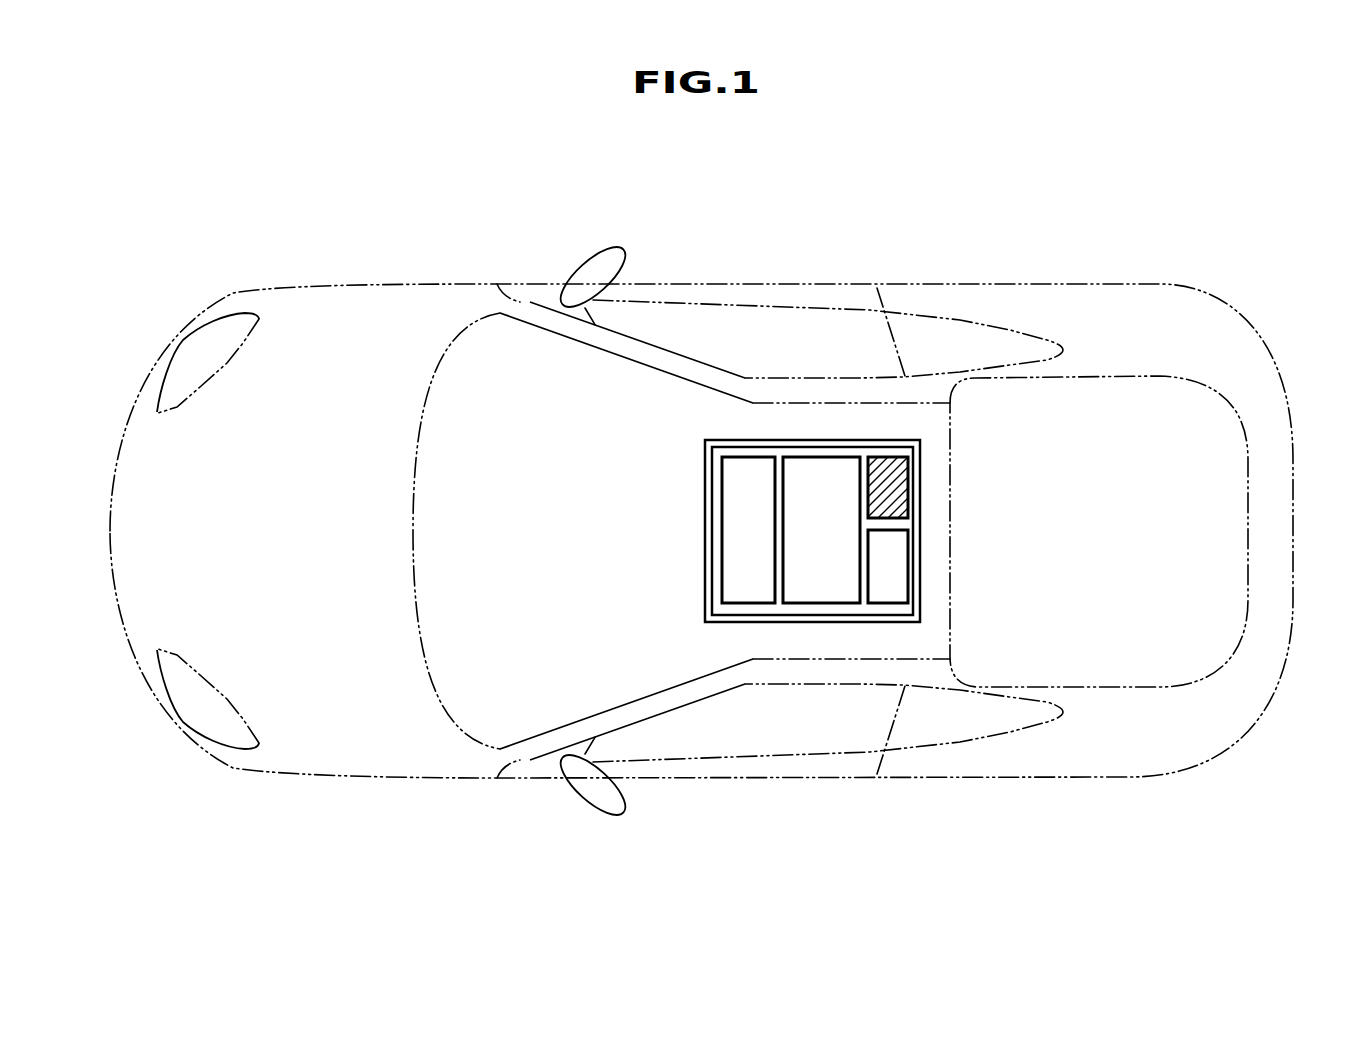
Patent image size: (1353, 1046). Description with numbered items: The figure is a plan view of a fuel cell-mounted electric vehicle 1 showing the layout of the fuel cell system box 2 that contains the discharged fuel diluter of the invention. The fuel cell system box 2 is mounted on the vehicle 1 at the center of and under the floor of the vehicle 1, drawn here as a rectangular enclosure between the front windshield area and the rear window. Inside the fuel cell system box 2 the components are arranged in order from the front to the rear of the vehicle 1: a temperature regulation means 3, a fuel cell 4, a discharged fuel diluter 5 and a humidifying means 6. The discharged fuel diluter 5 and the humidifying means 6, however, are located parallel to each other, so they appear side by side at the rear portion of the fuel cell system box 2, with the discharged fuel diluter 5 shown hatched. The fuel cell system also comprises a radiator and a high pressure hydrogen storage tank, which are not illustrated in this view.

The fuel cell-mounted electric vehicle 1 is at (851, 225).
The fuel cell system box 2 is at (810, 434).
The temperature regulation means 3 is at (745, 585).
The fuel cell 4 is at (819, 585).
The discharged fuel diluter 5 is at (889, 478).
The humidifying means 6 is at (892, 585).